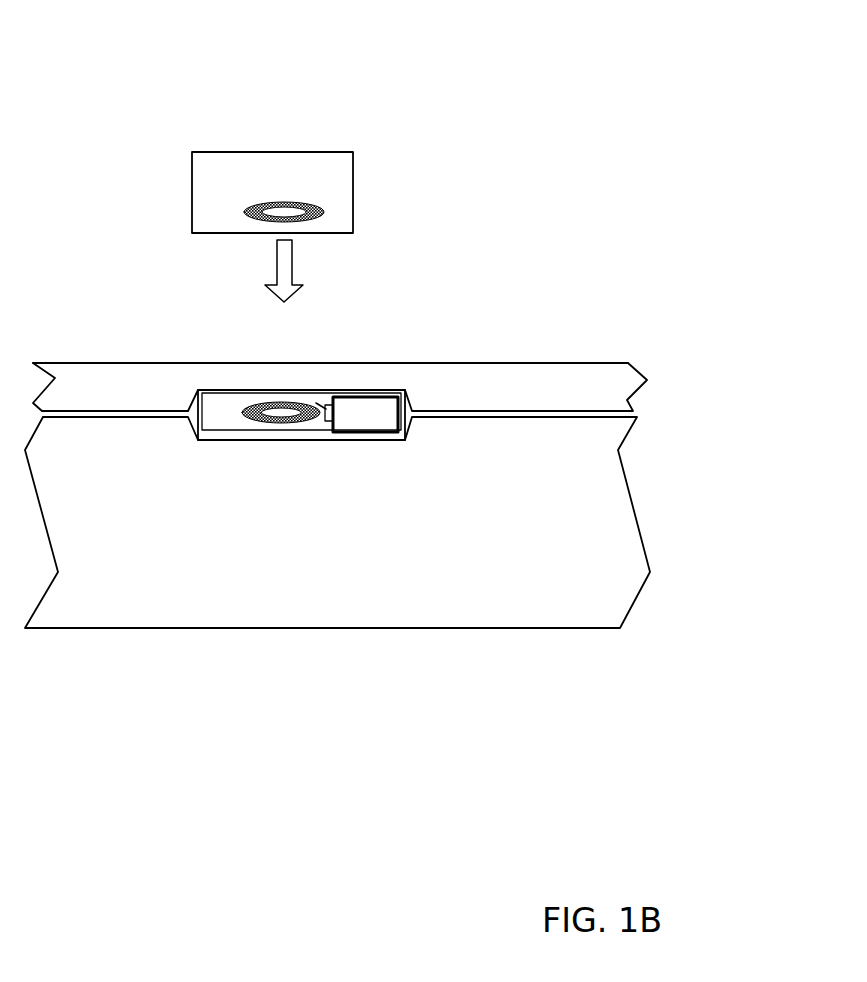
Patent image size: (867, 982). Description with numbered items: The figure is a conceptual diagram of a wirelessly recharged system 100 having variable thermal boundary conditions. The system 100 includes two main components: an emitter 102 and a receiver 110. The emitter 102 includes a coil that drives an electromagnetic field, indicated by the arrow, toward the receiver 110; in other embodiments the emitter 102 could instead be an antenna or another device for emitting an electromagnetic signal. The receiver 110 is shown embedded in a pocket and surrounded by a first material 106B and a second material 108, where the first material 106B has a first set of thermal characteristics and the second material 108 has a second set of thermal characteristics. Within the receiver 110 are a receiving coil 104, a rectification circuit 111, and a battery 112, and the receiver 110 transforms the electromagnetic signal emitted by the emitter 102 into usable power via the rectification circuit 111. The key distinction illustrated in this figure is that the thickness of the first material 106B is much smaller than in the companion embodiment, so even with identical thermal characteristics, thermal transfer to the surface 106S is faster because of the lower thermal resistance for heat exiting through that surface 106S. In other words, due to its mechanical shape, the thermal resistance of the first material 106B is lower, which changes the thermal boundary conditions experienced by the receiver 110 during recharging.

The system 100 is at (592, 96).
The emitter 102 is at (353, 170).
The receiving coil 104 is at (273, 423).
The surface 106S is at (442, 358).
The first material 106B is at (623, 373).
The second material 108 is at (623, 535).
The receiver 110 is at (228, 403).
The rectification circuit 111 is at (313, 403).
The battery 112 is at (362, 430).